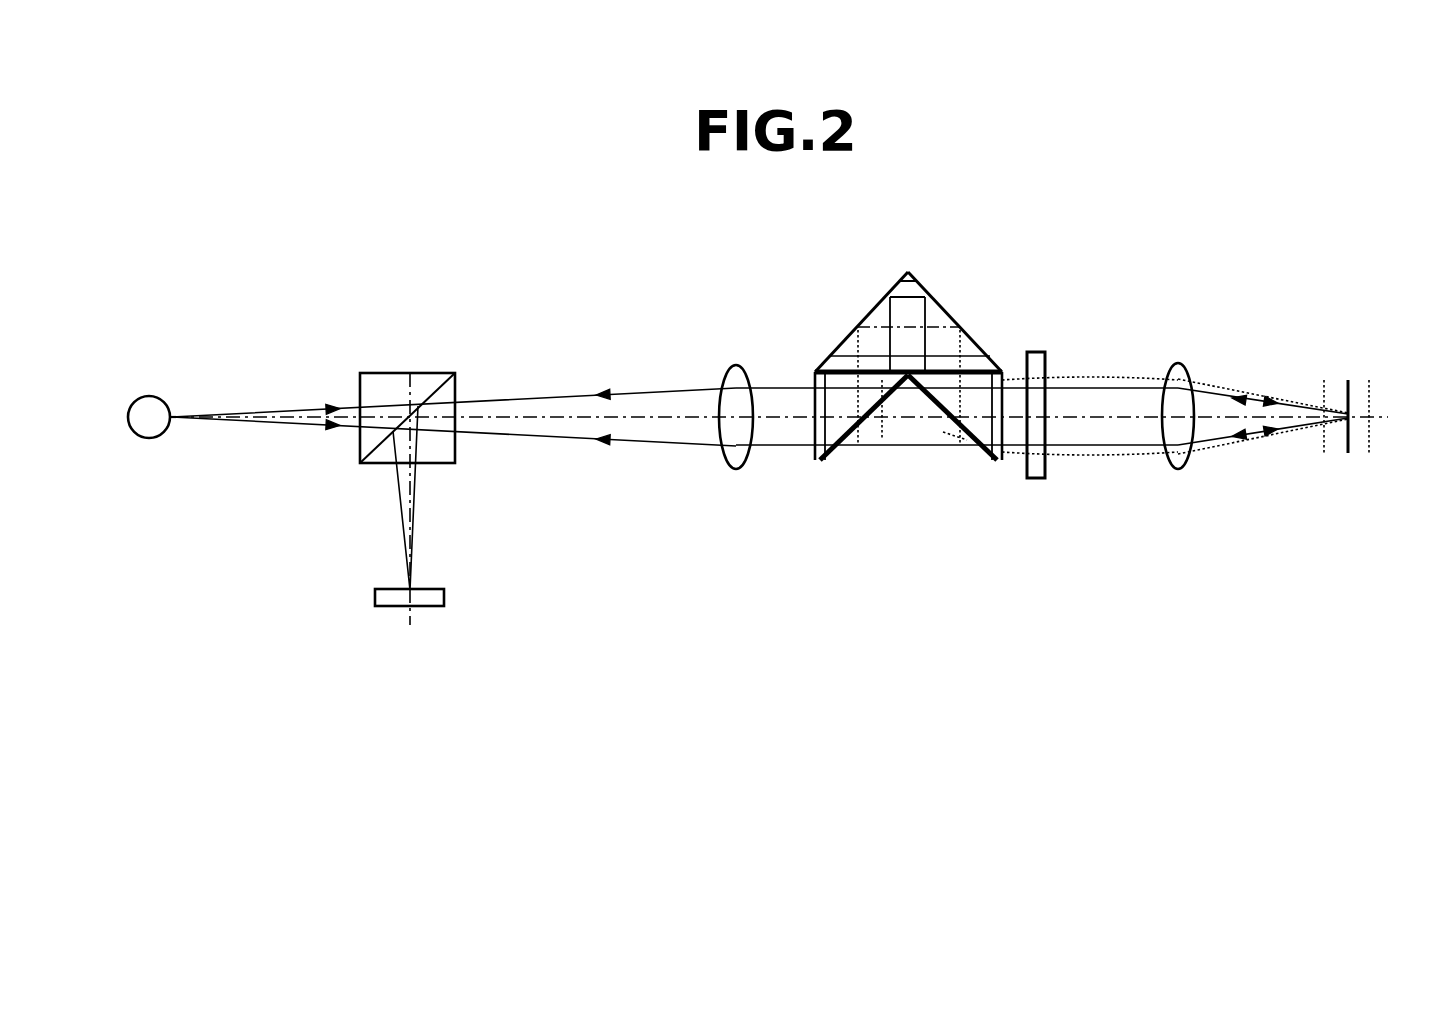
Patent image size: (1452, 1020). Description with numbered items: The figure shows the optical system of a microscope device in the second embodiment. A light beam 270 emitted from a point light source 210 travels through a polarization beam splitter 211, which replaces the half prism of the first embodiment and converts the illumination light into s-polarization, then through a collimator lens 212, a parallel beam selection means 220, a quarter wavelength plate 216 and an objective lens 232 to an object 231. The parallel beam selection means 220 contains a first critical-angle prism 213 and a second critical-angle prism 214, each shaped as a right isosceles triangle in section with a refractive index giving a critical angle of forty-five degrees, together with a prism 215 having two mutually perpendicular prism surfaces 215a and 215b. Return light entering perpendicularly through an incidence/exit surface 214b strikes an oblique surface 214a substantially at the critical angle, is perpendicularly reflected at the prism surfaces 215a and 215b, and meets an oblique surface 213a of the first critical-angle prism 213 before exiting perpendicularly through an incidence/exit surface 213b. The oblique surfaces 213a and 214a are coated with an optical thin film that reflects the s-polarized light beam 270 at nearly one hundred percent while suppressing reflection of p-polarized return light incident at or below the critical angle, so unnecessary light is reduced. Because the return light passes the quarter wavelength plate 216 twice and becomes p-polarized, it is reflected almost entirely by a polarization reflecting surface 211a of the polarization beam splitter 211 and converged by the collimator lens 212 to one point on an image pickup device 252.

The point light source 210 is at (155, 395).
The light beam 270 is at (275, 426).
The polarization beam splitter 211 is at (445, 445).
The polarization reflecting surface 211a is at (447, 377).
The image pickup device 252 is at (417, 590).
The collimator lens 212 is at (725, 462).
The parallel beam selection means 220 is at (915, 390).
The prism 215 is at (929, 303).
The prism surface 215a is at (975, 338).
The prism surface 215b is at (875, 308).
The first critical-angle prism 213 is at (838, 455).
The oblique surface 213a is at (836, 432).
The incidence/exit surface 213b is at (812, 434).
The second critical-angle prism 214 is at (986, 459).
The oblique surface 214a is at (928, 404).
The incidence/exit surface 214b is at (1007, 436).
The ¼ wavelength plate 216 is at (1047, 364).
The objective lens 232 is at (1183, 366).
The object 231 is at (1362, 368).